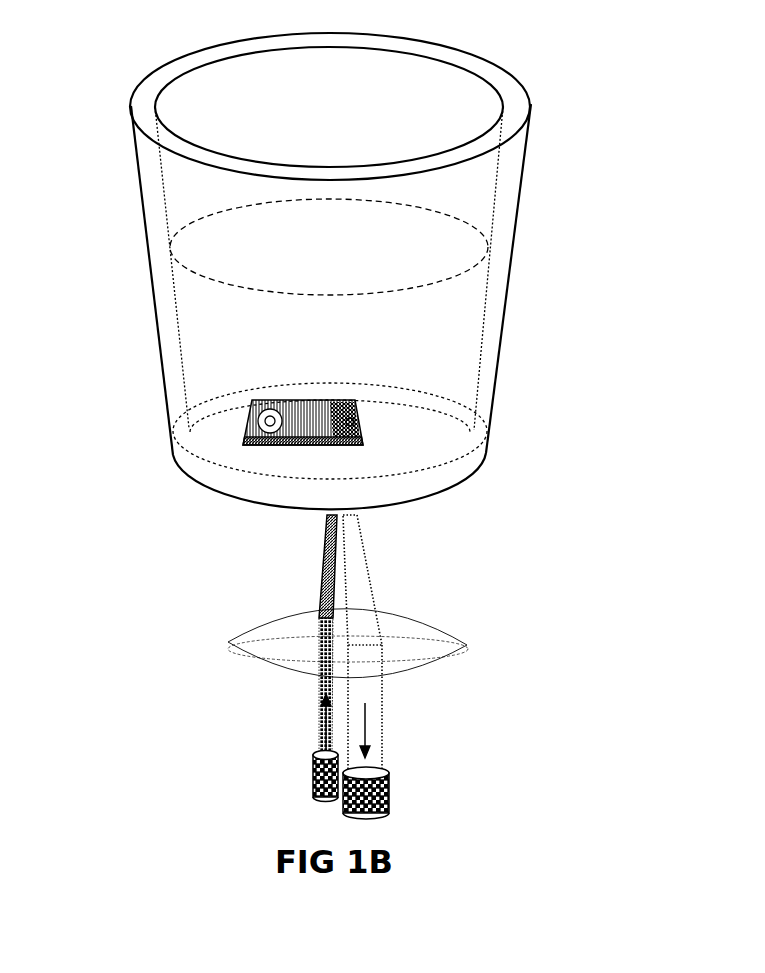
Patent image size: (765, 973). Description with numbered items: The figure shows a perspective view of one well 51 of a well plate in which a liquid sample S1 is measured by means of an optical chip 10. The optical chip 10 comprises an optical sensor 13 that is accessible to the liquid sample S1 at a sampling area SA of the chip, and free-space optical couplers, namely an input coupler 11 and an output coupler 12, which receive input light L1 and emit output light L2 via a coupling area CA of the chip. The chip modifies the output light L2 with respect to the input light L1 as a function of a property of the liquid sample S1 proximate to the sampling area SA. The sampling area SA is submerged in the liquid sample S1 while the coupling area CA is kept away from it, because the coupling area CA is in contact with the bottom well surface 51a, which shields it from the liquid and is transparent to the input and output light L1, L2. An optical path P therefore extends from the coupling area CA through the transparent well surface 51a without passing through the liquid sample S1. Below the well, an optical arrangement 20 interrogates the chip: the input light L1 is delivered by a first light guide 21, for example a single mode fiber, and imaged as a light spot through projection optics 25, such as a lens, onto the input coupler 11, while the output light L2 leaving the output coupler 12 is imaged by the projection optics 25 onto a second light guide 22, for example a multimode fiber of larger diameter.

The well 51 is at (567, 185).
The well surface 51a is at (405, 478).
The liquid sample S1 is at (333, 344).
The optical chip 10 is at (243, 413).
The input coupler 11 is at (348, 403).
The output coupler 12 is at (354, 420).
The optical sensor 13 is at (265, 408).
The sampling area SA is at (280, 412).
The coupling area CA is at (332, 452).
The optical unit 20 is at (175, 668).
The light guide 21 is at (311, 776).
The light guide 22 is at (391, 797).
The projection optics 25 is at (470, 661).
The input light L1 is at (316, 637).
The output light L2 is at (367, 644).
The optical path P is at (271, 550).